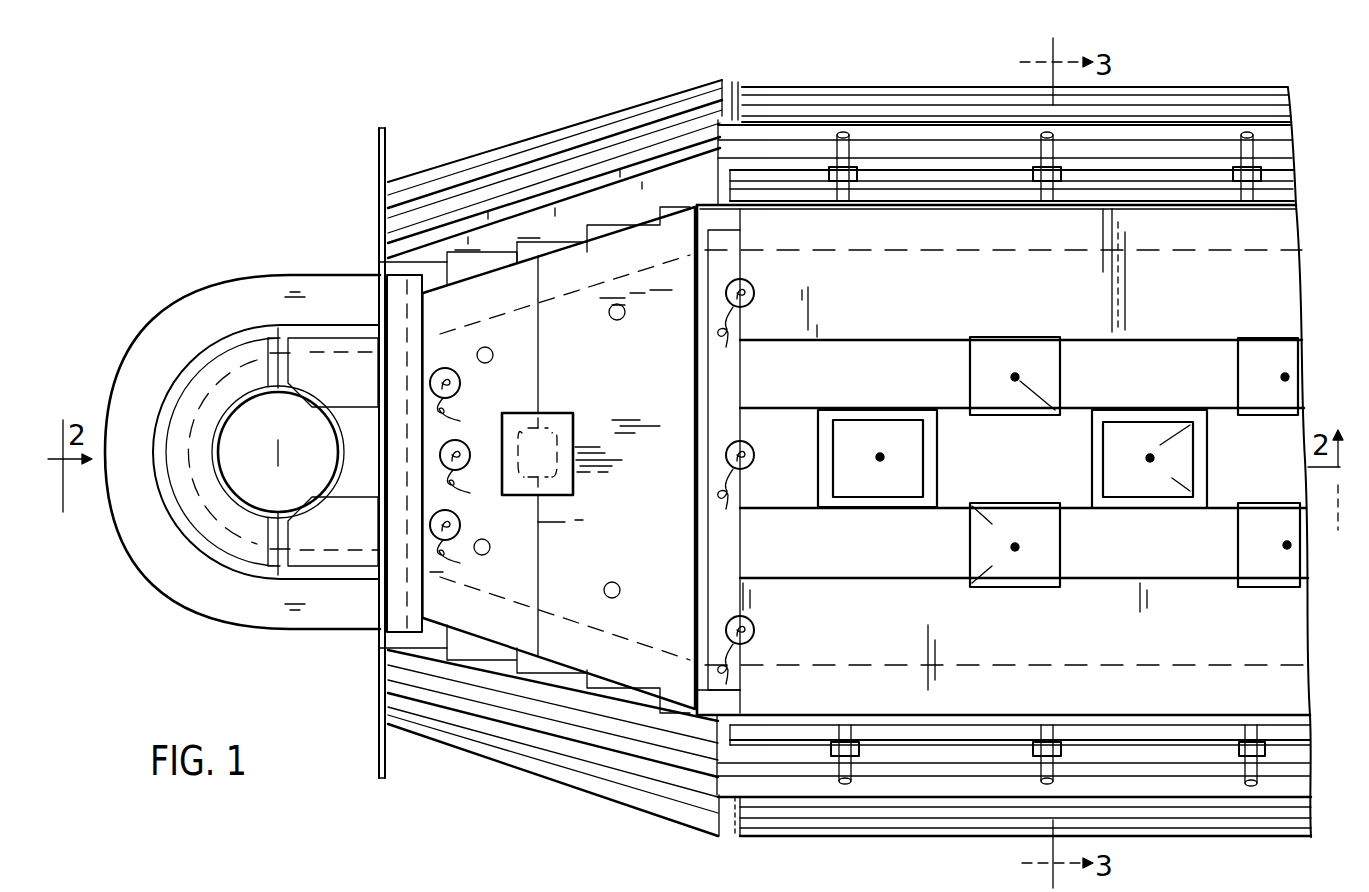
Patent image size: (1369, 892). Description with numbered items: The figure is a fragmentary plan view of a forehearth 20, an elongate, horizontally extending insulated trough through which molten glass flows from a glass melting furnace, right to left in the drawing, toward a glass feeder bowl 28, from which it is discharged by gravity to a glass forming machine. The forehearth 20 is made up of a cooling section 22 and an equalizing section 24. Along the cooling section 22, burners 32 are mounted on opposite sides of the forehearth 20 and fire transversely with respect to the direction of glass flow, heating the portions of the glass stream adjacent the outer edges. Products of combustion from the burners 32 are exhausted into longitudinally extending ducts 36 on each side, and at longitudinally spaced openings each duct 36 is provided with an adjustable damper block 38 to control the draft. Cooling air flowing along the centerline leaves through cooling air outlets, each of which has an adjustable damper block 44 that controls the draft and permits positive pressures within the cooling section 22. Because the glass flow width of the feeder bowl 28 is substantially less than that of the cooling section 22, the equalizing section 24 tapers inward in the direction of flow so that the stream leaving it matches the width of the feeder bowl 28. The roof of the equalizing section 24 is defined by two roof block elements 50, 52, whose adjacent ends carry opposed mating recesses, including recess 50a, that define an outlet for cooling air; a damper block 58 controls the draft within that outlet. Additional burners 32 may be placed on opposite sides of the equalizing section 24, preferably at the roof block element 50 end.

The forehearth 20 is at (850, 84).
The cooling section 22 is at (1187, 88).
The equalizing section 24 is at (480, 138).
The glass feeder bowl 28 is at (270, 608).
The burners 32 is at (842, 172).
The duct 36 is at (1097, 366).
The damper block 38 is at (1010, 353).
The damper block 44 is at (925, 477).
The roof block element 50 is at (655, 556).
The mating recess 50a is at (555, 448).
The roof block element 52 is at (514, 531).
The damper block 58 is at (575, 487).